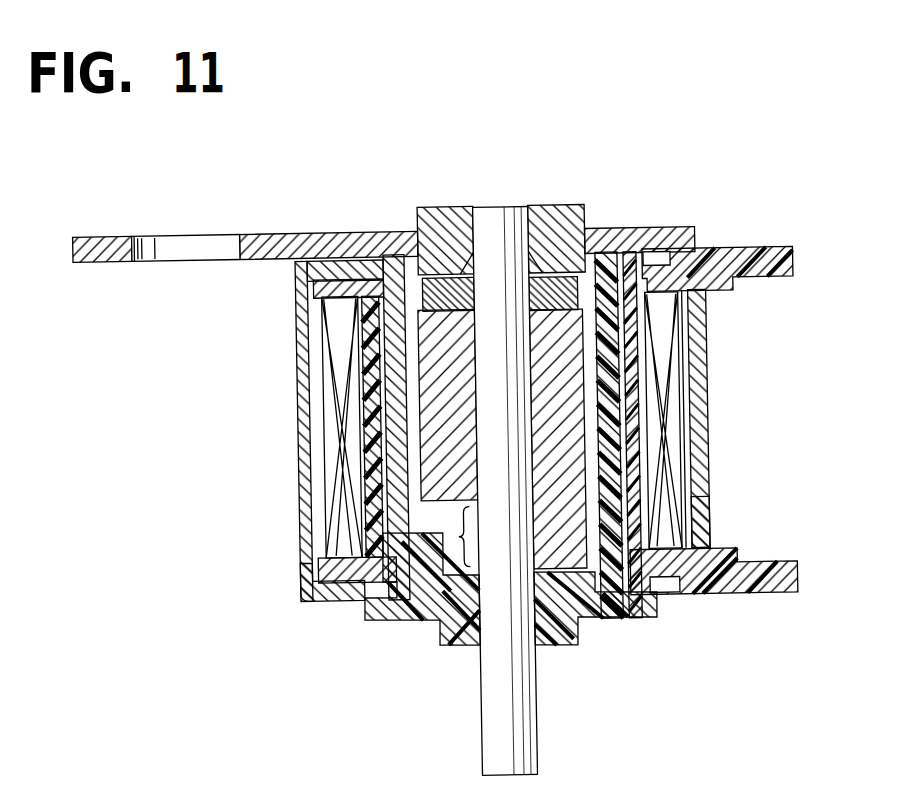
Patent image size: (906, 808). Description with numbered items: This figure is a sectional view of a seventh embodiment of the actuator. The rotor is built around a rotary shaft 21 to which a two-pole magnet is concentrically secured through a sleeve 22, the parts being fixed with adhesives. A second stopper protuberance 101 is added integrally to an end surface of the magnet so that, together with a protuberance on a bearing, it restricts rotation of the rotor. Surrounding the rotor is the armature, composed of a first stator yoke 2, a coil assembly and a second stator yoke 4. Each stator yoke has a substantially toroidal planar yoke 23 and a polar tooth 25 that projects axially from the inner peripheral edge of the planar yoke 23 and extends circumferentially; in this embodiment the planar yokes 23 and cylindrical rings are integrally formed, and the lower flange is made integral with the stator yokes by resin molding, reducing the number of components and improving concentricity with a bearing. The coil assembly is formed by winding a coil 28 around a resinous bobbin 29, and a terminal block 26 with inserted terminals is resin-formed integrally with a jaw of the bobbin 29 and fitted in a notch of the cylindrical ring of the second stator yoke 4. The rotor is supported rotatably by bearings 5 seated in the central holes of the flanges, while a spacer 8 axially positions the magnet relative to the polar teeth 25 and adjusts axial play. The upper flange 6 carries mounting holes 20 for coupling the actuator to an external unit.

The first stator yoke 2 is at (306, 339).
The second stator yoke 4 is at (306, 520).
The bearing 5 is at (564, 224).
The upper flange 6 is at (106, 230).
The spacer 8 is at (446, 272).
The mounting hole 20 is at (190, 242).
The rotary shaft 21 is at (492, 727).
The sleeve 22 is at (587, 602).
The planar yoke 23 is at (350, 262).
The polar tooth 25 is at (391, 393).
The terminal block 26 is at (775, 265).
The coil 28 is at (329, 462).
The bobbin 29 is at (364, 585).
The second stopper protuberance 101 is at (460, 532).